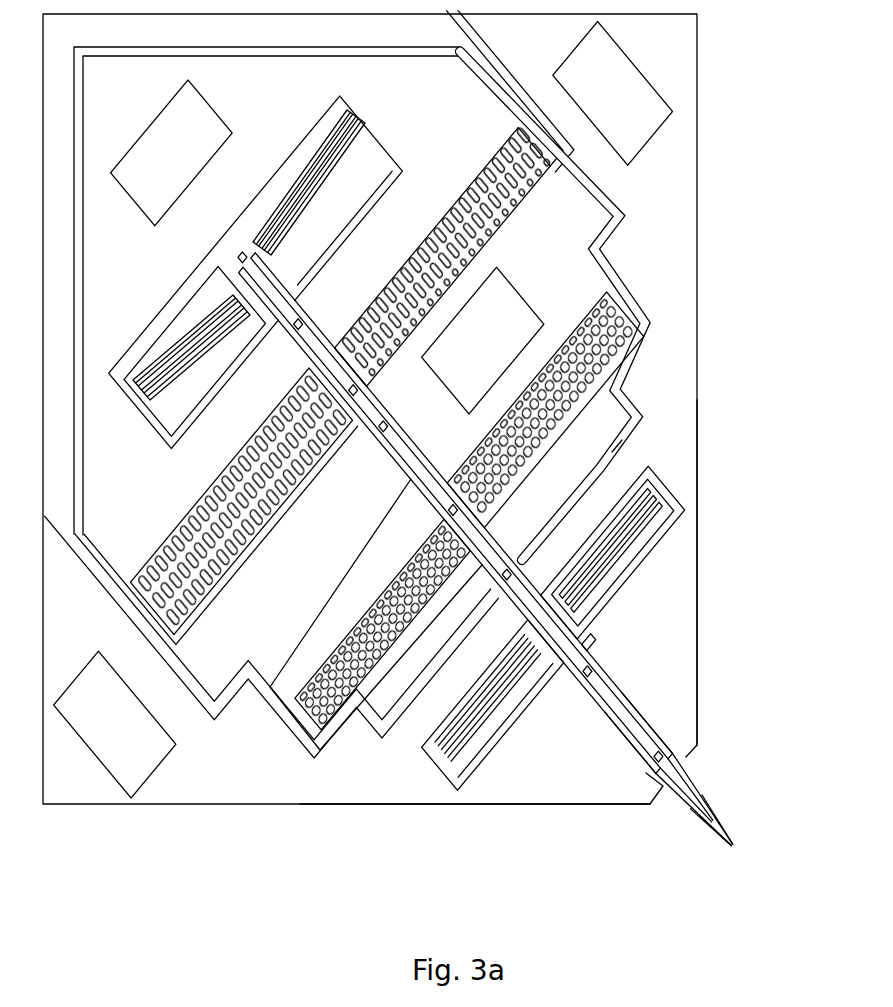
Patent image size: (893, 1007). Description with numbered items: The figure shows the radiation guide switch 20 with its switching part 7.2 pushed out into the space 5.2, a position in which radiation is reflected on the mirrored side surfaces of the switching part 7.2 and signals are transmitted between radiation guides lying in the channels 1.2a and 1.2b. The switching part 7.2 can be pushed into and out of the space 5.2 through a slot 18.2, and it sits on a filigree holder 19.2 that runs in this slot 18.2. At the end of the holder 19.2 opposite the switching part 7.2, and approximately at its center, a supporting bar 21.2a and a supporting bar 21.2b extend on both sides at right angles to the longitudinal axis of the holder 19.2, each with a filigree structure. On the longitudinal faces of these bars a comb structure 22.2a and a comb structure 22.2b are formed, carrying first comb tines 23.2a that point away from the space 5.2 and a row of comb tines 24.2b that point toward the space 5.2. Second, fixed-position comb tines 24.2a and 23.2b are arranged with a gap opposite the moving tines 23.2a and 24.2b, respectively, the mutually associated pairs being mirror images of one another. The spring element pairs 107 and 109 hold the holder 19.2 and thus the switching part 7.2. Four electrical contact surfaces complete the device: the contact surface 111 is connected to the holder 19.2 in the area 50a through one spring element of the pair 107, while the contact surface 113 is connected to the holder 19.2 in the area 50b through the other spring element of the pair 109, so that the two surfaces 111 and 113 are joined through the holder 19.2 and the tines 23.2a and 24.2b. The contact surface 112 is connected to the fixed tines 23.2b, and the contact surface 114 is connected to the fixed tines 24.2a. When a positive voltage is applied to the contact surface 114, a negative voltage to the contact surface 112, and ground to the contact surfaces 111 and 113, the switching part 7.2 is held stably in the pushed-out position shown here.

The radiation guide switch 20 is at (42, 410).
The contact surface 114 is at (191, 157).
The contact surface 111 is at (620, 99).
The contact surface 112 is at (493, 350).
The contact surface 113 is at (133, 733).
The spring element pair 109 is at (349, 172).
The fixed-position comb tines 24.2a is at (463, 205).
The comb structure 22.2a is at (557, 122).
The supporting bar 21.2b is at (449, 254).
The comb tines 24.2b is at (605, 338).
The supporting bar 21.2a is at (559, 390).
The comb structure 22.2b is at (660, 303).
The first comb tines 23.2a is at (445, 340).
The fixed-position comb tines 23.2b is at (622, 440).
The channel 1.2a is at (737, 532).
The channel 1.2b is at (497, 837).
The spring element pair 107 is at (627, 587).
The area 50a is at (593, 640).
The area 50b is at (560, 679).
The holder 19.2 is at (641, 723).
The slot 18.2 is at (655, 766).
The switching part 7.2 is at (723, 836).
The space 5.2 is at (708, 827).